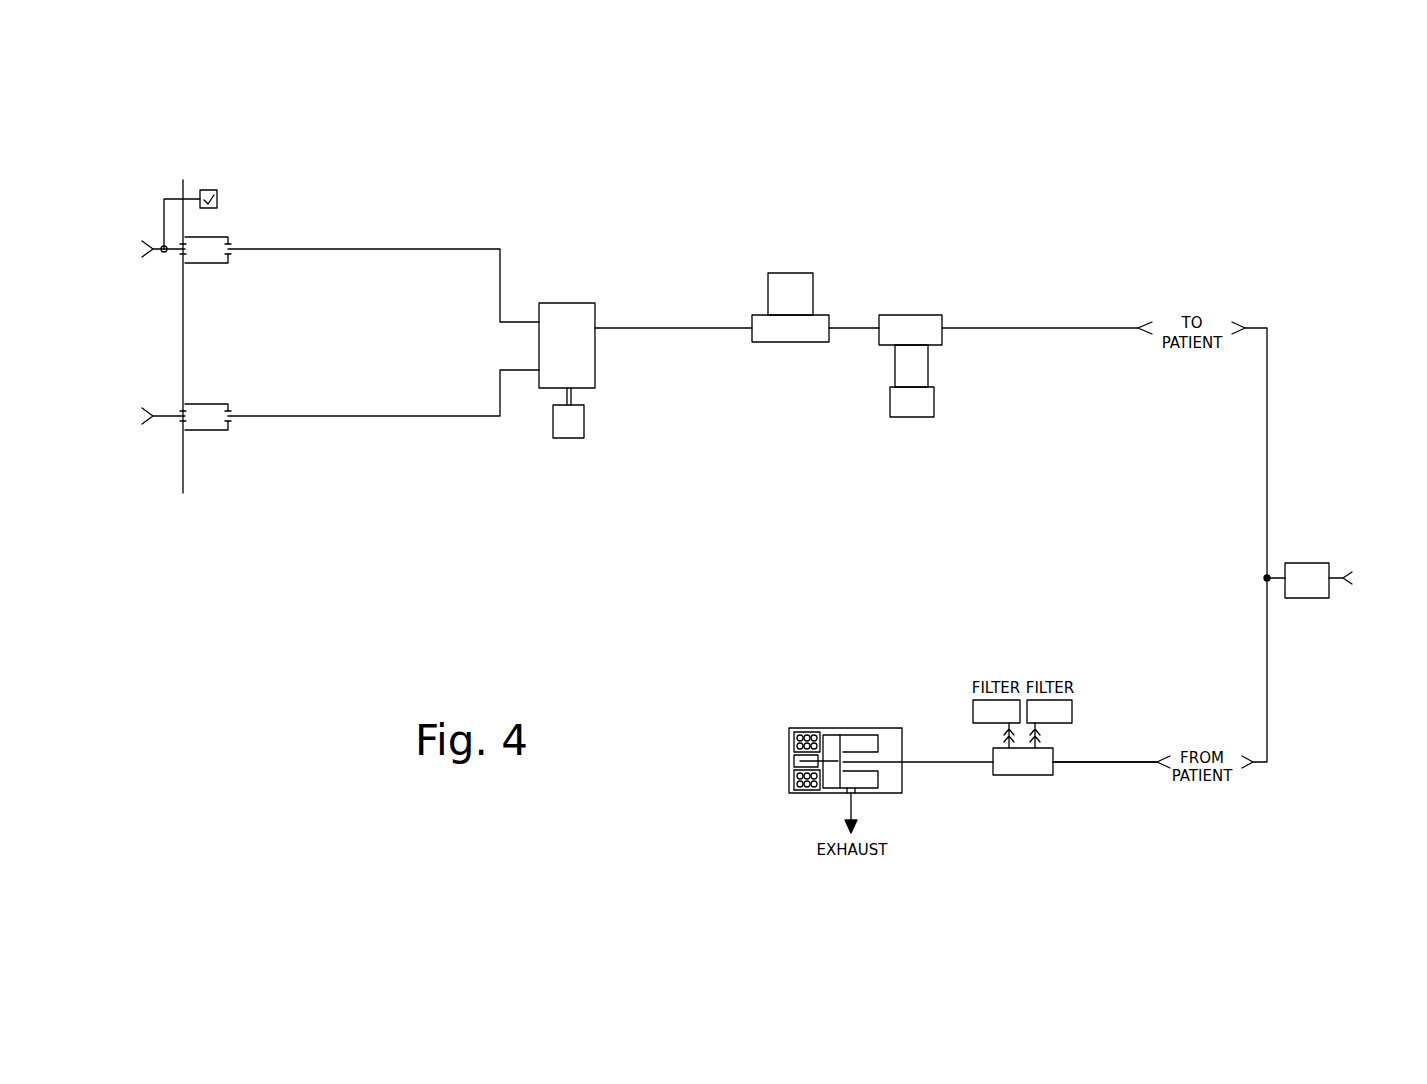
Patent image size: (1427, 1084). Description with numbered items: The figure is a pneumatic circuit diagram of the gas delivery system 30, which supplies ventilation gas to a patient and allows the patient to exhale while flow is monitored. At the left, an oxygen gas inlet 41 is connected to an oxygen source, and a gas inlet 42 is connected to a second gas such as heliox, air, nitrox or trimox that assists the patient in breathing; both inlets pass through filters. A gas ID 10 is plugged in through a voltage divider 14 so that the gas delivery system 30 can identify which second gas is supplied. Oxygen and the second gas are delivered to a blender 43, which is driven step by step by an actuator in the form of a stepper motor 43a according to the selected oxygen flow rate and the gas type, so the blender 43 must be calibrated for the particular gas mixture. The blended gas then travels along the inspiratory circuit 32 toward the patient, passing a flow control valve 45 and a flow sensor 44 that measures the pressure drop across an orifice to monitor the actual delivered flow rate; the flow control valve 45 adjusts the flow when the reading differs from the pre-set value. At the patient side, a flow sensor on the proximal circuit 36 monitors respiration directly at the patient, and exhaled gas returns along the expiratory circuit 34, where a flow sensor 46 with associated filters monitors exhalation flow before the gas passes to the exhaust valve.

The gas ID 10 is at (164, 199).
The voltage divider 14 is at (214, 190).
The gas inlet 42 is at (172, 253).
The oxygen gas inlet 41 is at (172, 420).
The blender 43 is at (577, 350).
The stepper motor 43a is at (578, 425).
The flow control valve 45 is at (795, 293).
The inspiratory circuit 32 is at (827, 382).
The flow sensor 44 is at (925, 325).
The gas delivery system 30 is at (1100, 229).
The proximal circuit 36 is at (1322, 622).
The flow sensor 46 is at (1037, 758).
The expiratory circuit 34 is at (1128, 814).